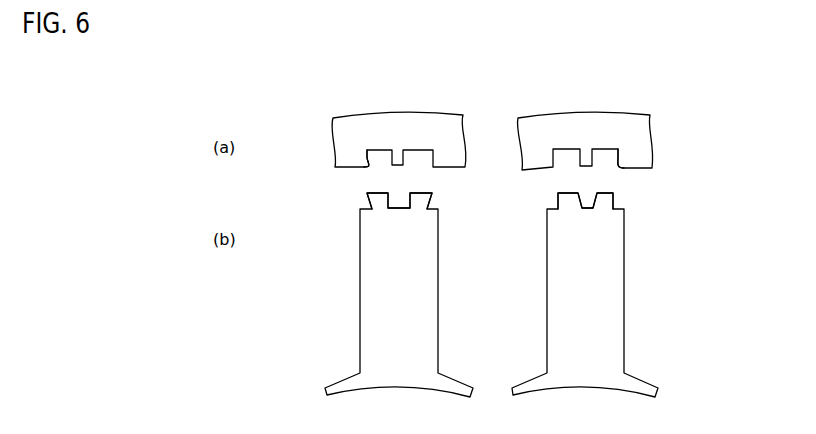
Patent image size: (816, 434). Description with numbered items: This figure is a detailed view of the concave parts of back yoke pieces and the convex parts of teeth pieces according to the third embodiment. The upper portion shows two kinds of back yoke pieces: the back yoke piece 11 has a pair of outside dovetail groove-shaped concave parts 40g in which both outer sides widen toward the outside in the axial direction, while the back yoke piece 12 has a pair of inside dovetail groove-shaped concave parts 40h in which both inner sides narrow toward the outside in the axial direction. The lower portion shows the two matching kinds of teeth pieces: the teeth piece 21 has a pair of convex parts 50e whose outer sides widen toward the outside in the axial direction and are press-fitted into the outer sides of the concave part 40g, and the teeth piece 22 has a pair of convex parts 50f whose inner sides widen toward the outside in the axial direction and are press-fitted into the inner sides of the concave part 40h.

The back yoke piece 11 is at (352, 115).
The back yoke piece 12 is at (623, 115).
The teeth piece 21 is at (360, 291).
The teeth piece 22 is at (625, 285).
The outside dovetail groove-shaped concave part 40g is at (370, 160).
The inside dovetail groove-shaped concave part 40h is at (615, 159).
The convex part 50e is at (368, 201).
The convex part 50f is at (594, 201).